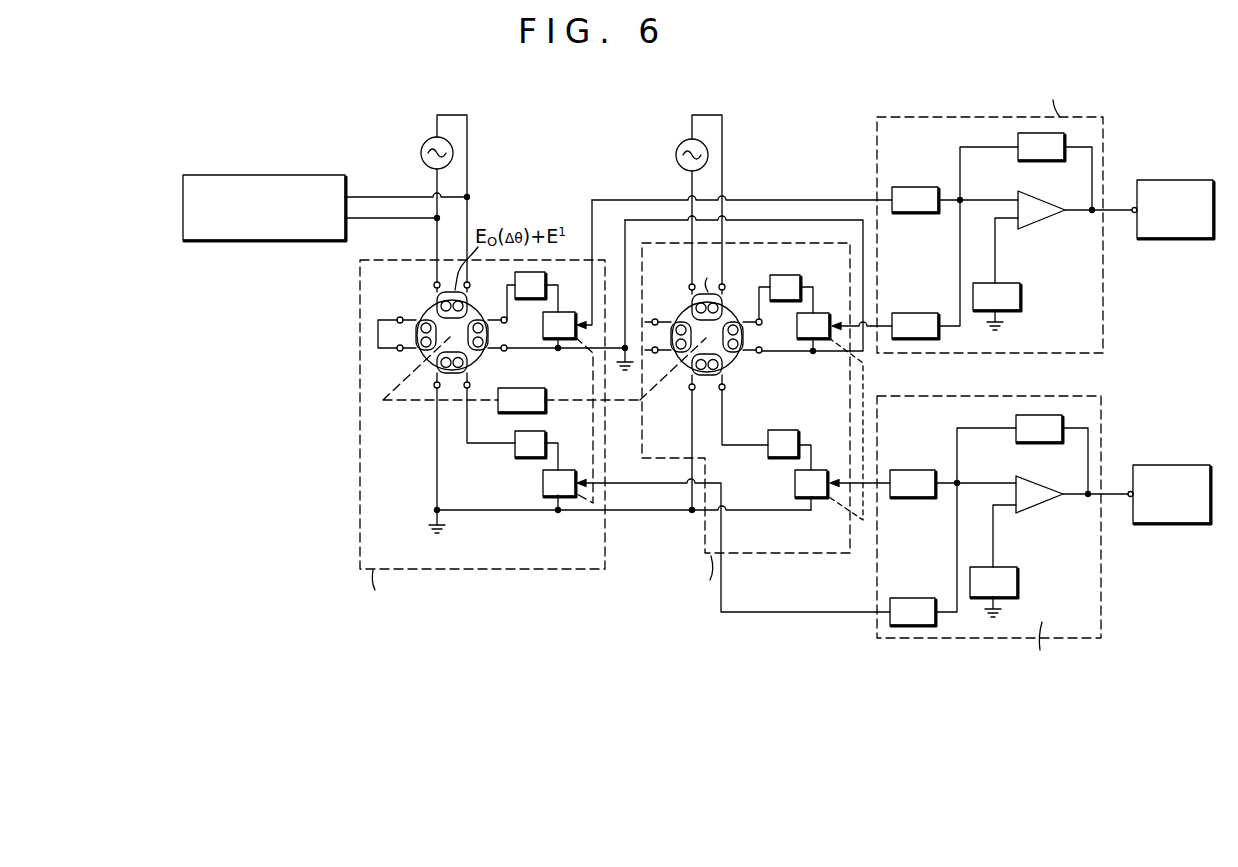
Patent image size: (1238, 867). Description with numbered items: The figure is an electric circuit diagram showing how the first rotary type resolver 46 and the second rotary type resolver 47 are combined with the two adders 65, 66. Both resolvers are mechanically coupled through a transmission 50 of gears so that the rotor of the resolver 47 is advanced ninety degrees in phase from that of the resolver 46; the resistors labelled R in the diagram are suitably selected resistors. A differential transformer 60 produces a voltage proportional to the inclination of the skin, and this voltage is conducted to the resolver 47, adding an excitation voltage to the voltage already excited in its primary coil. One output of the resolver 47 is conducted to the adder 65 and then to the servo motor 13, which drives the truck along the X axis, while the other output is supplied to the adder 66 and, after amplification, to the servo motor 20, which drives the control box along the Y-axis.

The servo motor 13 is at (1166, 180).
The servo motor 20 is at (1168, 465).
The first rotary type resolver 46 is at (740, 250).
The second rotary type resolver 47 is at (388, 436).
The transmission 50 is at (530, 393).
The differential transformer 60 is at (322, 178).
The adder 65 is at (977, 130).
The adder 66 is at (965, 630).